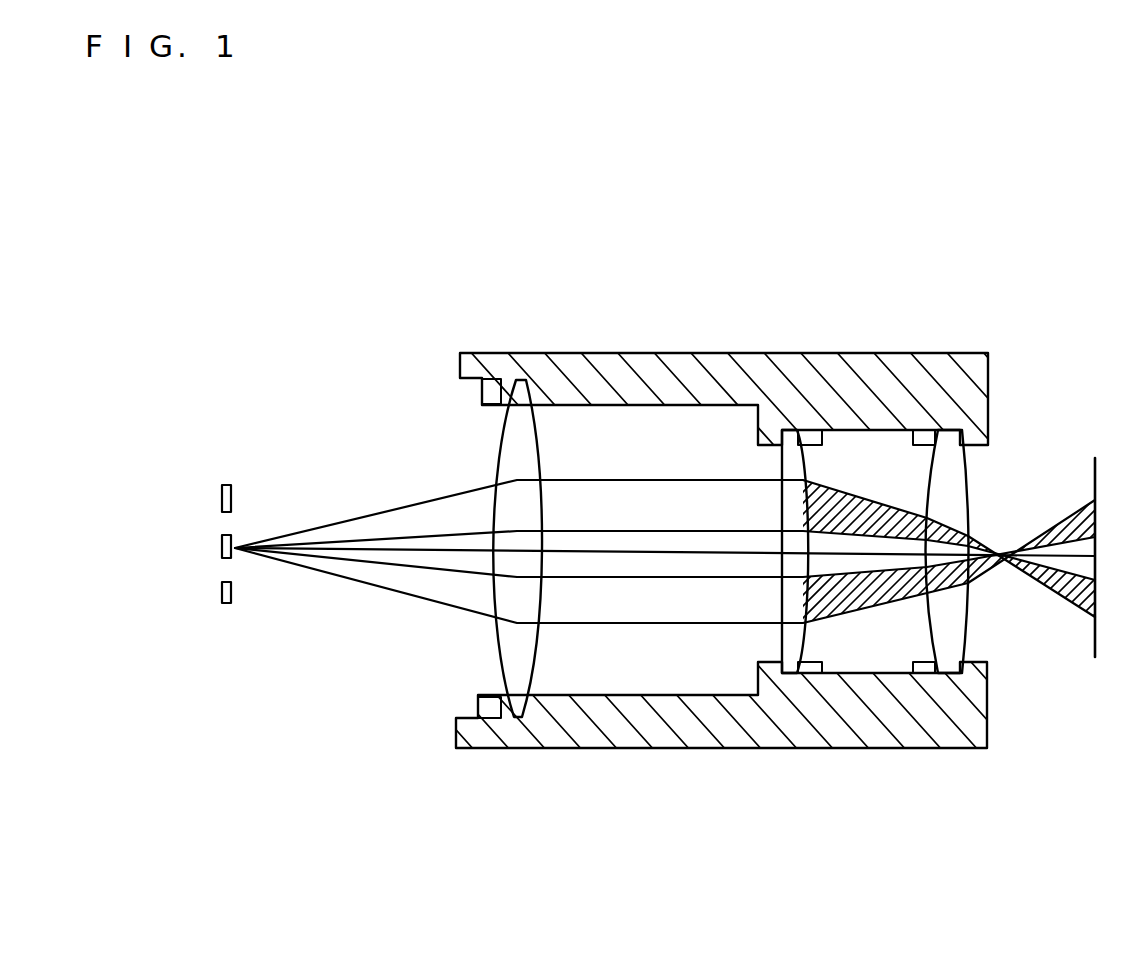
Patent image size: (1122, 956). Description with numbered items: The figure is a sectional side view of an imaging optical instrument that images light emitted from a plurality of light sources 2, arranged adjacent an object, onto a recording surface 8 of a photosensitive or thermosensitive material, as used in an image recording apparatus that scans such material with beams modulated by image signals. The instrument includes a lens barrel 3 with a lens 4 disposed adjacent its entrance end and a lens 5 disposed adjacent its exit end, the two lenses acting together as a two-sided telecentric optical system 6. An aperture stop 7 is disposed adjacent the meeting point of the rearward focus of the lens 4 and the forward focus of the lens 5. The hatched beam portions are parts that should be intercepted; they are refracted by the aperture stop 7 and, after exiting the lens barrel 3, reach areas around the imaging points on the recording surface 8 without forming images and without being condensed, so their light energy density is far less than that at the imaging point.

The light sources 2 is at (222, 497).
The lens barrel 3 is at (807, 733).
The lens 4 is at (525, 381).
The lens 5 is at (950, 432).
The two-sided telecentric optical system 6 is at (730, 445).
The aperture stop 7 is at (790, 646).
The recording surface 8 is at (1095, 638).